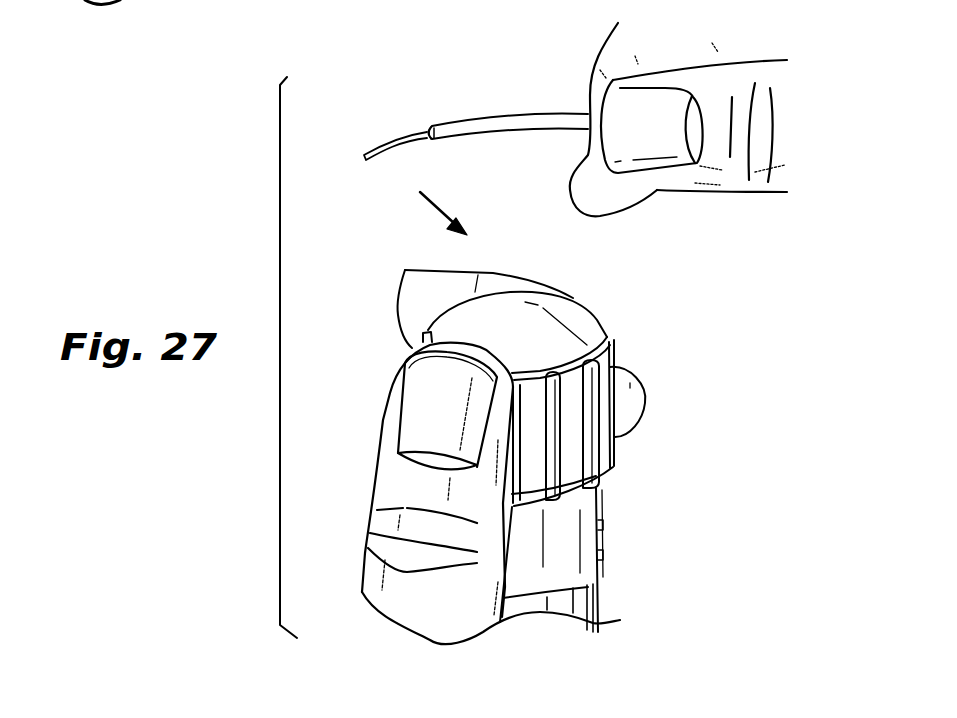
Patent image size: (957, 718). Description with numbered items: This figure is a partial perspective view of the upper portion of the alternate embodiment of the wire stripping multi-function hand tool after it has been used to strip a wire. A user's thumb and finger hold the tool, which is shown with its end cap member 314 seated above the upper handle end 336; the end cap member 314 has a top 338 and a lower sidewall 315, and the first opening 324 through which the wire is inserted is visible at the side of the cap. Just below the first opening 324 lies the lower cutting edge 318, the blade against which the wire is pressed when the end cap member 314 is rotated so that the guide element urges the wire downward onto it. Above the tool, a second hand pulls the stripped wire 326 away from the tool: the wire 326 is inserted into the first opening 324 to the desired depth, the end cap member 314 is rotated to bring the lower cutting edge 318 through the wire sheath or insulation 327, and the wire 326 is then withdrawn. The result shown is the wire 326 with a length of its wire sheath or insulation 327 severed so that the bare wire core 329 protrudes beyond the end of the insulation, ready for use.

The end cap member 314 is at (610, 372).
The lower sidewall 315 is at (525, 560).
The lower cutting edge 318 is at (600, 545).
The first opening 324 is at (611, 527).
The wire 326 is at (518, 123).
The wire sheath or insulation 327 is at (424, 127).
The wire core 329 is at (368, 147).
The upper handle end 336 is at (595, 612).
The top 338 is at (517, 307).